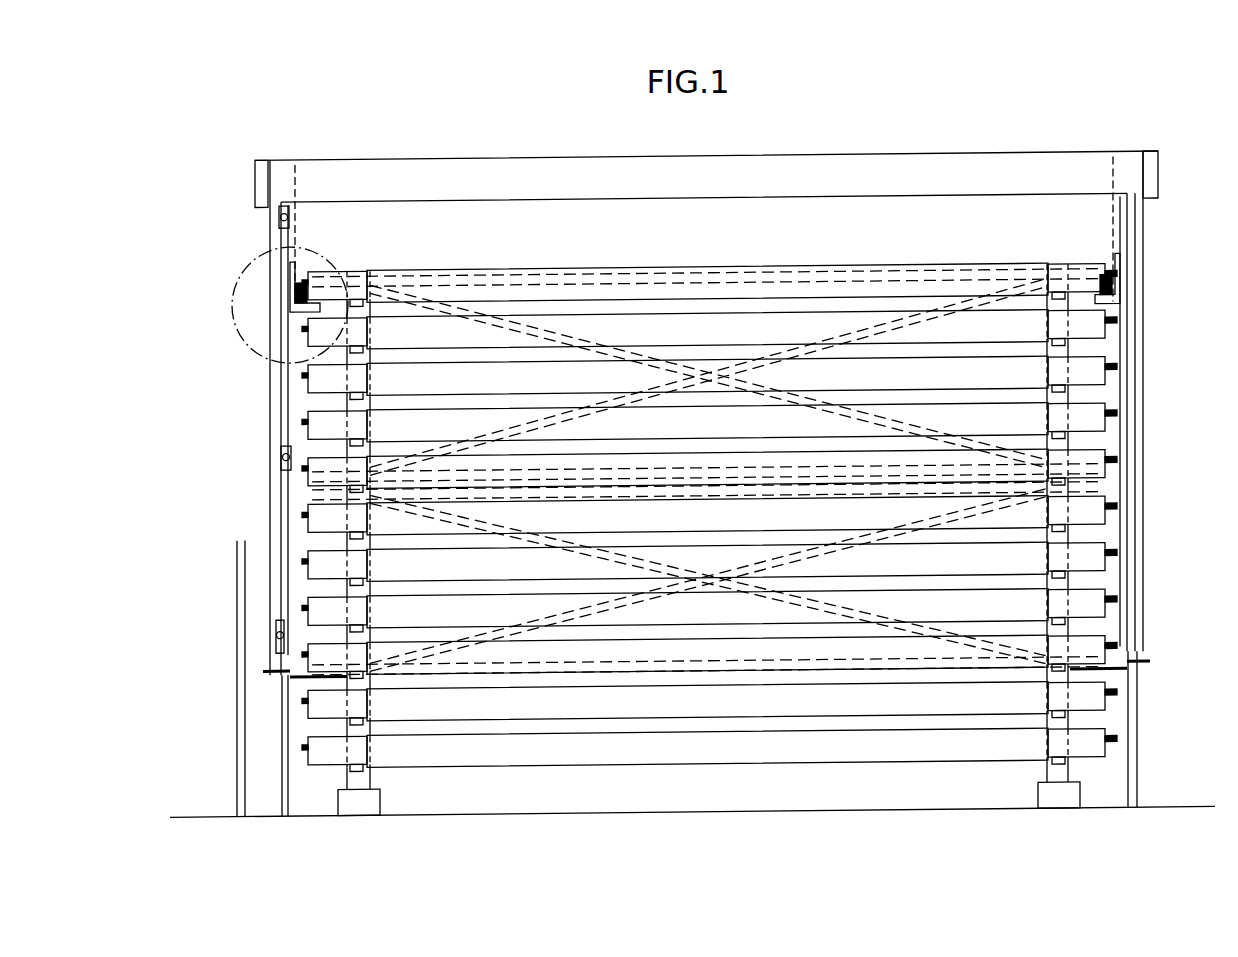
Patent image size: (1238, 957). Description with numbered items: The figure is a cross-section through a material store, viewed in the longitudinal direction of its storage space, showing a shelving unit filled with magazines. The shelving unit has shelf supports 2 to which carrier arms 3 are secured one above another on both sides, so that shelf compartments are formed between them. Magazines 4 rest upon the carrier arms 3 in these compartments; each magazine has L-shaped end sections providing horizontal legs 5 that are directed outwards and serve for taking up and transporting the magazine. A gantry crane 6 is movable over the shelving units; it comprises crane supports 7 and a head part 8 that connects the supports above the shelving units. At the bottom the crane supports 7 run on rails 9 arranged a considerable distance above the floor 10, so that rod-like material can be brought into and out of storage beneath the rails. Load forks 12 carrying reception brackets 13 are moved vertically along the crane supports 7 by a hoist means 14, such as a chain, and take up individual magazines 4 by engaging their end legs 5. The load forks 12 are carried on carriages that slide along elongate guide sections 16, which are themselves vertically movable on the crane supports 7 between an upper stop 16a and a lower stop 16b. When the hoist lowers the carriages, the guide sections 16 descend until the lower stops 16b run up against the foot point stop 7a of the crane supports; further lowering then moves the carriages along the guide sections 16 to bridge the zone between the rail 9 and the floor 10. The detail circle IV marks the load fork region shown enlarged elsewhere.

The shelf support 2 is at (352, 280).
The carrier arm 3 is at (357, 722).
The magazine 4 is at (730, 312).
The horizontal leg 5 is at (1112, 408).
The gantry crane 6 is at (823, 144).
The crane support 7 is at (270, 512).
The foot point stop 7a is at (276, 634).
The head part 8 is at (552, 177).
The rail 9 is at (262, 670).
The floor 10 is at (650, 816).
The load fork 12 is at (290, 305).
The reception bracket 13 is at (295, 315).
The hoist means 14 is at (300, 178).
The guide section 16 is at (283, 262).
The upper stop 16a is at (281, 216).
The lower stop 16b is at (280, 458).
The detail view circle IV is at (245, 346).